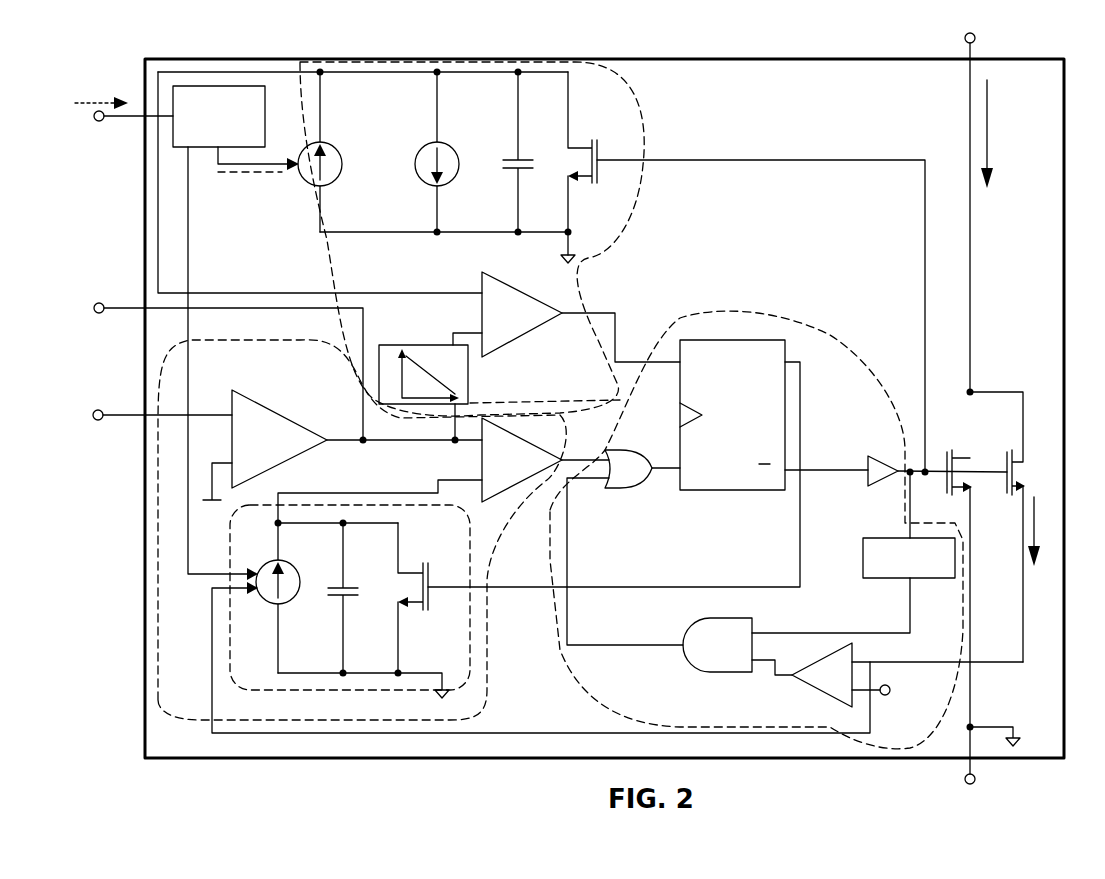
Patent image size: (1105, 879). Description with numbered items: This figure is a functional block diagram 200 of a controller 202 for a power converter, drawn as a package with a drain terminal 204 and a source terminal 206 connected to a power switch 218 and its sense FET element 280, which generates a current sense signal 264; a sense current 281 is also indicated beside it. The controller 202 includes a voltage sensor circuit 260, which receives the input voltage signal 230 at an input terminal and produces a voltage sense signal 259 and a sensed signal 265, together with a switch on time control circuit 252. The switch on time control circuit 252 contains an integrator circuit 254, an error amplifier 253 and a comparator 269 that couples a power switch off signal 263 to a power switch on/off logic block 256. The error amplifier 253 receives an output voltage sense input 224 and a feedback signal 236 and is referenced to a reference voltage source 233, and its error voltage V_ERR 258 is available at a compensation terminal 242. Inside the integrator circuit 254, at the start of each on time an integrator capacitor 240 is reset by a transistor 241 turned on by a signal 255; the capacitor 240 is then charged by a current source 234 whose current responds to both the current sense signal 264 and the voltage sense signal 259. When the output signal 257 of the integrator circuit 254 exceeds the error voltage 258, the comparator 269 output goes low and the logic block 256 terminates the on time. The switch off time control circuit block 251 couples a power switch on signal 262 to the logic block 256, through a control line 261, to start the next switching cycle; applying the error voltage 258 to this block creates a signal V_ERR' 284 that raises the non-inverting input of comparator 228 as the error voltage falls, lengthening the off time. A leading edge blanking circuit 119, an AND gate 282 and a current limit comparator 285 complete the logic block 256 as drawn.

The functional block diagram 200 is at (592, 16).
The controller 202 is at (134, 738).
The drain terminal D 204 is at (962, 40).
The source terminal S 206 is at (962, 781).
The leading edge blanking (LEB) circuit 119 is at (938, 485).
The power switch 218 is at (951, 445).
The output voltage sense input 224 is at (62, 403).
The comparator 228 is at (522, 314).
The input voltage signal 230 is at (107, 97).
The reference voltage source 233 is at (224, 506).
The current source 234 is at (1000, 153).
The feedback signal 236 is at (100, 462).
The integrator circuit capacitor 240 is at (358, 582).
The transistor 241 is at (430, 572).
The compensation terminal COMP 242 is at (107, 272).
The switch off time control circuit block 251 is at (640, 112).
The switch on time control circuit 252 is at (490, 707).
The error amplifier 253 is at (357, 439).
The integrator circuit 254 is at (222, 607).
The signal 255 is at (509, 588).
The power switch on/off logic block 256 is at (835, 337).
The output signal 257 is at (400, 492).
The error signal V_ERR 258 is at (338, 408).
The voltage sense signal 259 is at (208, 268).
The voltage sensor circuit 260 is at (260, 86).
The off-time transistor control line 261 is at (727, 158).
The power switch on signal 262 is at (612, 308).
The power switch off signal 263 is at (588, 446).
The current sense signal 264 is at (496, 742).
The sensed input voltage signal 265 is at (268, 176).
The comparator 269 is at (545, 460).
The sense FET element 280 is at (1040, 471).
The sense current IS 281 is at (1033, 574).
The AND gate 282 is at (737, 646).
The signal V_ERR' 284 is at (452, 310).
The current limit comparator 285 is at (808, 689).